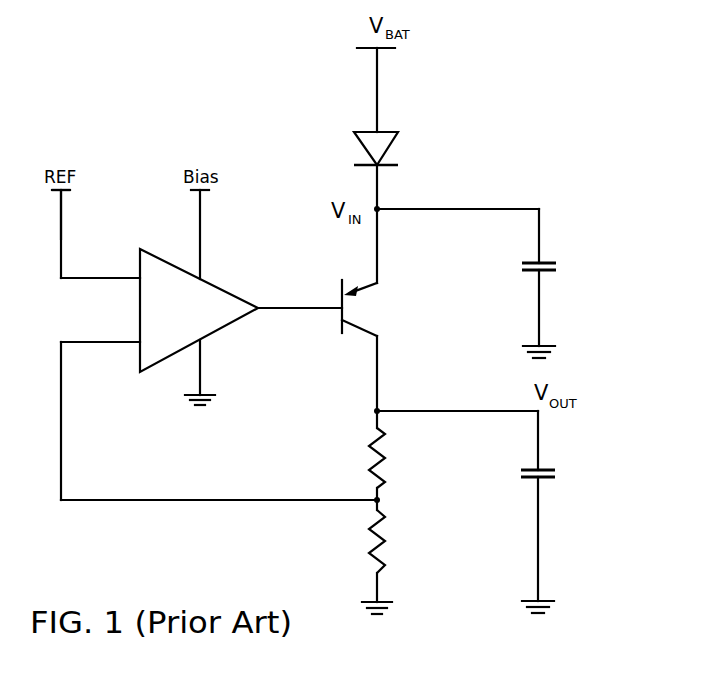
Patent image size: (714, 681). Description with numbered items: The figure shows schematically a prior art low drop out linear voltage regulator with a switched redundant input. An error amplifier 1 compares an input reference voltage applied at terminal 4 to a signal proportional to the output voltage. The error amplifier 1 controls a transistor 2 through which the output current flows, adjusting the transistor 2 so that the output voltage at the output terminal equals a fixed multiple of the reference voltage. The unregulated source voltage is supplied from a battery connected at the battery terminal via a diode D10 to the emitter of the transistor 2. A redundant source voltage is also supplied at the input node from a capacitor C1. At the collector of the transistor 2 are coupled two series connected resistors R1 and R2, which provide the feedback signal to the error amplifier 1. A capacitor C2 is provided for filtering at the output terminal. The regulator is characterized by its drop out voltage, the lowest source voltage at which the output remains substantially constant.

The error amplifier 1 is at (226, 291).
The transistor 2 is at (341, 281).
The terminal 4 is at (61, 228).
The diode D10 is at (398, 134).
The resistor R1 is at (386, 473).
The resistor R2 is at (386, 538).
The capacitor C1 is at (556, 263).
The capacitor C2 is at (555, 470).